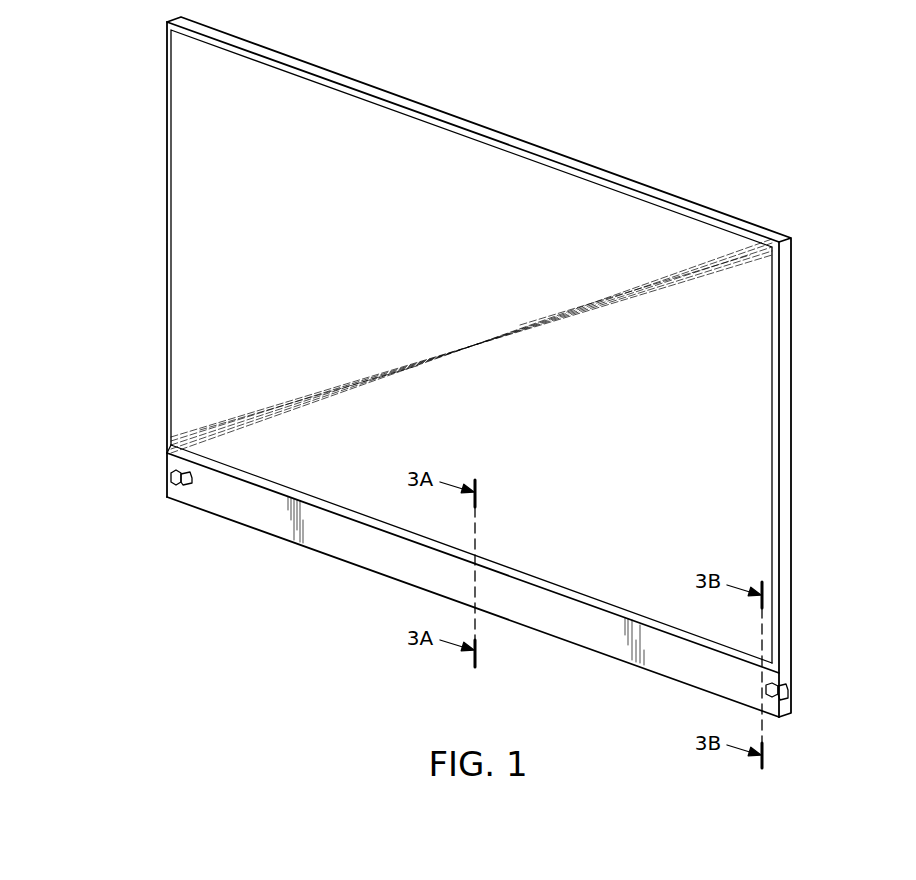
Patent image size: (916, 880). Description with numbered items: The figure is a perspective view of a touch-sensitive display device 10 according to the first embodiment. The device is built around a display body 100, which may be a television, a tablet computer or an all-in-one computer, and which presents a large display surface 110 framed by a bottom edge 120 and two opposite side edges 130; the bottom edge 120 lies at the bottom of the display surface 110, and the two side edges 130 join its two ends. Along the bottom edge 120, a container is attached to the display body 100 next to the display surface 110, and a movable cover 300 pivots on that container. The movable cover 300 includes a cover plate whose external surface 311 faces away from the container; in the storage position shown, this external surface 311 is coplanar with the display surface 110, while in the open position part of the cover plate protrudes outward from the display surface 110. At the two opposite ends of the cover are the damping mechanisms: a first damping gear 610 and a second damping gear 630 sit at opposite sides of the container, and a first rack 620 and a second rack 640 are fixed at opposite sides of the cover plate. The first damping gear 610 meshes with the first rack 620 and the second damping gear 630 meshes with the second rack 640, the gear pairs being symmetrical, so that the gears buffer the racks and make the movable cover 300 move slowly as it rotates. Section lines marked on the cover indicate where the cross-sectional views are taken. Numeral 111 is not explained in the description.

The touch-sensitive display device 10 is at (16, 71).
The display body 100 is at (818, 333).
The display surface 110 is at (565, 278).
The bottom edge of display panel 111 is at (167, 445).
The bottom edge 120 is at (187, 462).
The side edges 130 is at (167, 237).
The movable cover 300 is at (362, 580).
The external surface 311 is at (583, 615).
The first damping gear 610 is at (788, 700).
The first rack 620 is at (780, 688).
The second damping gear 630 is at (172, 481).
The second rack 640 is at (185, 484).